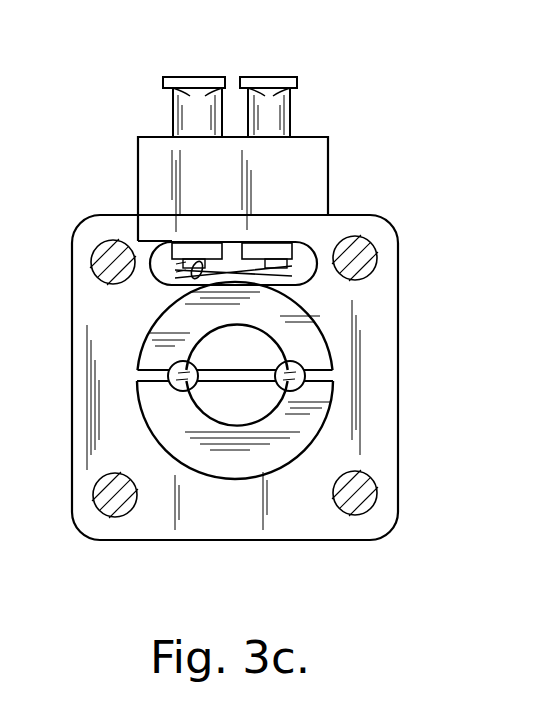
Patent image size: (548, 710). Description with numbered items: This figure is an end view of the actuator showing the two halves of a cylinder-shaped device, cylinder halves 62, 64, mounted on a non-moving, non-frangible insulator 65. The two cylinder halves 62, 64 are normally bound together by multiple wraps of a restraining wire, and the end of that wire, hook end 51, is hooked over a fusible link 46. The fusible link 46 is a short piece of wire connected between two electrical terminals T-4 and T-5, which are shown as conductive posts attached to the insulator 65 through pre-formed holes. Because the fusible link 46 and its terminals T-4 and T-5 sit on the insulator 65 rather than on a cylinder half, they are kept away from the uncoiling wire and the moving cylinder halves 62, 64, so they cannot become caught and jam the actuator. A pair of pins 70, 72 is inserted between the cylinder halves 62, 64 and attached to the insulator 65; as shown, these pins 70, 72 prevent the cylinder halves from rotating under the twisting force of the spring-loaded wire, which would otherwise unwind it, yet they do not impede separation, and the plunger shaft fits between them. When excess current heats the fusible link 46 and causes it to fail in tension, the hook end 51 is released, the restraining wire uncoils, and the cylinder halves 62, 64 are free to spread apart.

The electrical terminal T-5 is at (173, 82).
The electrical terminal T-4 is at (293, 82).
The hook end 51 is at (140, 218).
The fusible link 46 is at (285, 265).
The cylinder half 64 is at (310, 328).
The pin 72 is at (305, 367).
The pin 70 is at (180, 384).
The insulator 65 is at (232, 519).
The cylinder half 62 is at (262, 462).